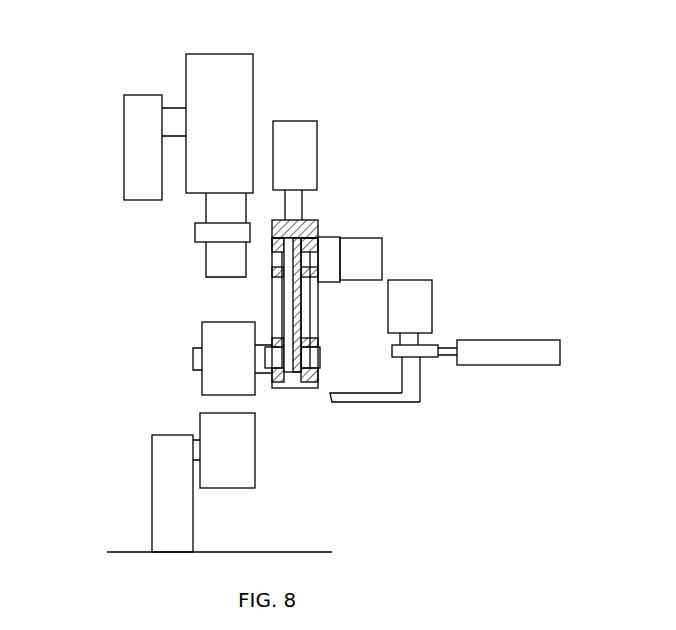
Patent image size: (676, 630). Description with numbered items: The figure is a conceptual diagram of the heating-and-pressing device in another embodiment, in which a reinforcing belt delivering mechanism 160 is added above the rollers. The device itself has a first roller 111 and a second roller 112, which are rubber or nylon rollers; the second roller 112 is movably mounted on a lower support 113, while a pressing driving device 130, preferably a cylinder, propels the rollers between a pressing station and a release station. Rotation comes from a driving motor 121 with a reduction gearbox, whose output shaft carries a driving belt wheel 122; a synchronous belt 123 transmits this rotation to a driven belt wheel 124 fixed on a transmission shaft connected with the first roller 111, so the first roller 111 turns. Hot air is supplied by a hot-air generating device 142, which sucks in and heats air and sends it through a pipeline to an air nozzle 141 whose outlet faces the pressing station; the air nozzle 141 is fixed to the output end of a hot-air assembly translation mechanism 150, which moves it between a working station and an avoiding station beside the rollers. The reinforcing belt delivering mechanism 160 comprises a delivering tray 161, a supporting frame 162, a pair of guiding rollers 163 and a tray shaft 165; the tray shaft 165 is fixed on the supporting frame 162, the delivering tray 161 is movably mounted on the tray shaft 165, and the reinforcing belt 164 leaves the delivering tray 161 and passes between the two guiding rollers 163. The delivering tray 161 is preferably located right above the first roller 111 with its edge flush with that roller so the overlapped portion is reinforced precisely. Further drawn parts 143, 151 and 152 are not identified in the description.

The reinforcing belt delivering mechanism 160 is at (130, 63).
The delivering tray 161 is at (233, 78).
The supporting frame 162 is at (135, 138).
The guiding roller 163 is at (218, 232).
The reinforcing belt 164 is at (222, 203).
The tray shaft 165 is at (170, 122).
The pressing driving device 130 is at (310, 153).
The driving belt wheel 122 is at (317, 240).
The driving motor 121 is at (353, 250).
The synchronous belt 123 is at (295, 317).
The driven belt wheel 124 is at (307, 353).
The first roller 111 is at (220, 355).
The second roller 112 is at (233, 452).
The lower support 113 is at (172, 497).
The air nozzle 141 is at (338, 403).
The hot-air generating device 142 is at (418, 308).
The connecting rod 143 is at (408, 383).
The hot-air assembly translation mechanism 150 is at (500, 373).
The clamping jaw 151 is at (455, 343).
The connecting plate 152 is at (423, 353).